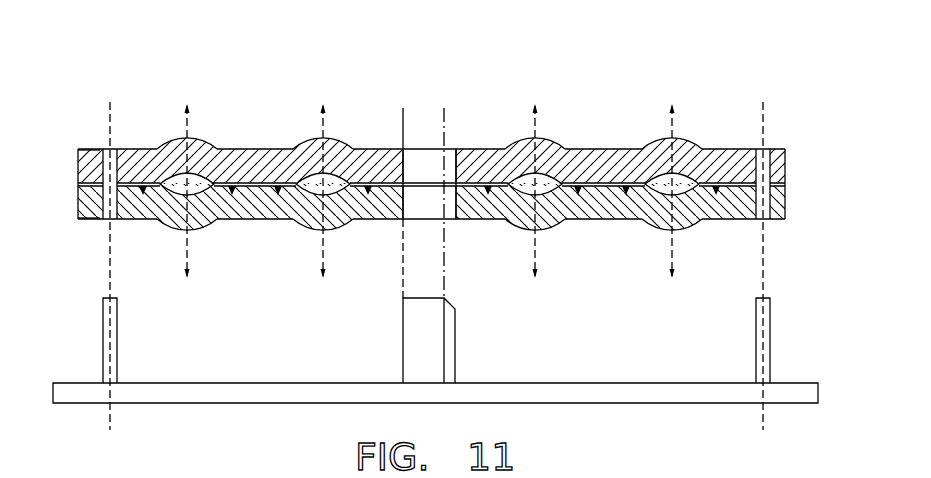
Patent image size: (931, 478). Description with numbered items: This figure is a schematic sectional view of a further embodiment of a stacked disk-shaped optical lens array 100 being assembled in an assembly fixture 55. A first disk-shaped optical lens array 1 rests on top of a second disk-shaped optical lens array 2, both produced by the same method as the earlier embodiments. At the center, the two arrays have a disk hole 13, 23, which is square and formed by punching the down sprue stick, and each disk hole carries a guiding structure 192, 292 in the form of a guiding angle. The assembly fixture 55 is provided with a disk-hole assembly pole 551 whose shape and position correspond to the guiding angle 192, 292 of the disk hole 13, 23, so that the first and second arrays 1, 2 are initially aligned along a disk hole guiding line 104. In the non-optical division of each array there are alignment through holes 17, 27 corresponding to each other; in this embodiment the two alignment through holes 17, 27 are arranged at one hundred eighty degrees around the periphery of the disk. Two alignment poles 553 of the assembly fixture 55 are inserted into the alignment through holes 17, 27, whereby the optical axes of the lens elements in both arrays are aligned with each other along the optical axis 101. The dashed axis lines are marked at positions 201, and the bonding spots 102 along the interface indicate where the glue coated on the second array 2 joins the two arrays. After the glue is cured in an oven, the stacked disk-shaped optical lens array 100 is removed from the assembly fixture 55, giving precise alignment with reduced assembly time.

The stacked disk-shaped optical lens array 100 is at (130, 65).
The first disk-shaped optical lens array 1 is at (786, 156).
The second disk-shaped optical lens array 2 is at (786, 205).
The alignment through hole 17 is at (80, 156).
The alignment through hole 27 is at (80, 214).
The disk hole 13 is at (418, 160).
The disk hole 23 is at (418, 208).
The guiding structure 192 is at (452, 158).
The guiding structure 292 is at (456, 226).
The disk hole guiding line 104 is at (428, 191).
The optical axis 101 is at (459, 258).
The positioning location 201 is at (438, 279).
The bonding spot 102 is at (143, 195).
The assembly fixture 55 is at (617, 394).
The disk-hole assembly pole 551 is at (452, 342).
The alignment pole 553 is at (103, 333).